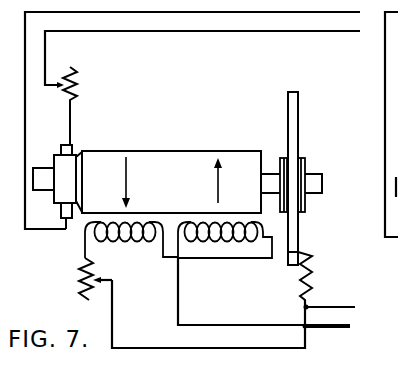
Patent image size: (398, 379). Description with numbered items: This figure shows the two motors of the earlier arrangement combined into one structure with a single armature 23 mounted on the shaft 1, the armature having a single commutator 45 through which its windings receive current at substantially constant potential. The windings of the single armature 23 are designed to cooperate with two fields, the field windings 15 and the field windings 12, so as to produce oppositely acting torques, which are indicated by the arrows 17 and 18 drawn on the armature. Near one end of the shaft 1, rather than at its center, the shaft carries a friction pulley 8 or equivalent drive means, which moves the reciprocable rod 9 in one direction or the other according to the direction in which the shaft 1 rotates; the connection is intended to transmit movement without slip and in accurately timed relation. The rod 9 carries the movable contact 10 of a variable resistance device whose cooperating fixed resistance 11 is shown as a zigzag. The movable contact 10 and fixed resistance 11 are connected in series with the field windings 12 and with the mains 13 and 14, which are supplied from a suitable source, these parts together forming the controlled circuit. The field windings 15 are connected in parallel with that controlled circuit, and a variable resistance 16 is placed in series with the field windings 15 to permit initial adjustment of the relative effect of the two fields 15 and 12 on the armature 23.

The shaft 1 is at (345, 151).
The friction pulley 8 is at (302, 160).
The rod 9 is at (293, 123).
The movable contact 10 is at (296, 262).
The fixed resistance 11 is at (312, 285).
The field windings 12 is at (233, 246).
The main 13 is at (343, 295).
The main 14 is at (345, 331).
The field windings 15 is at (136, 243).
The variable resistance 16 is at (82, 284).
The torque indication 17 is at (121, 178).
The torque indication 18 is at (221, 180).
The single armature 23 is at (197, 141).
The single commutator 45 is at (68, 165).